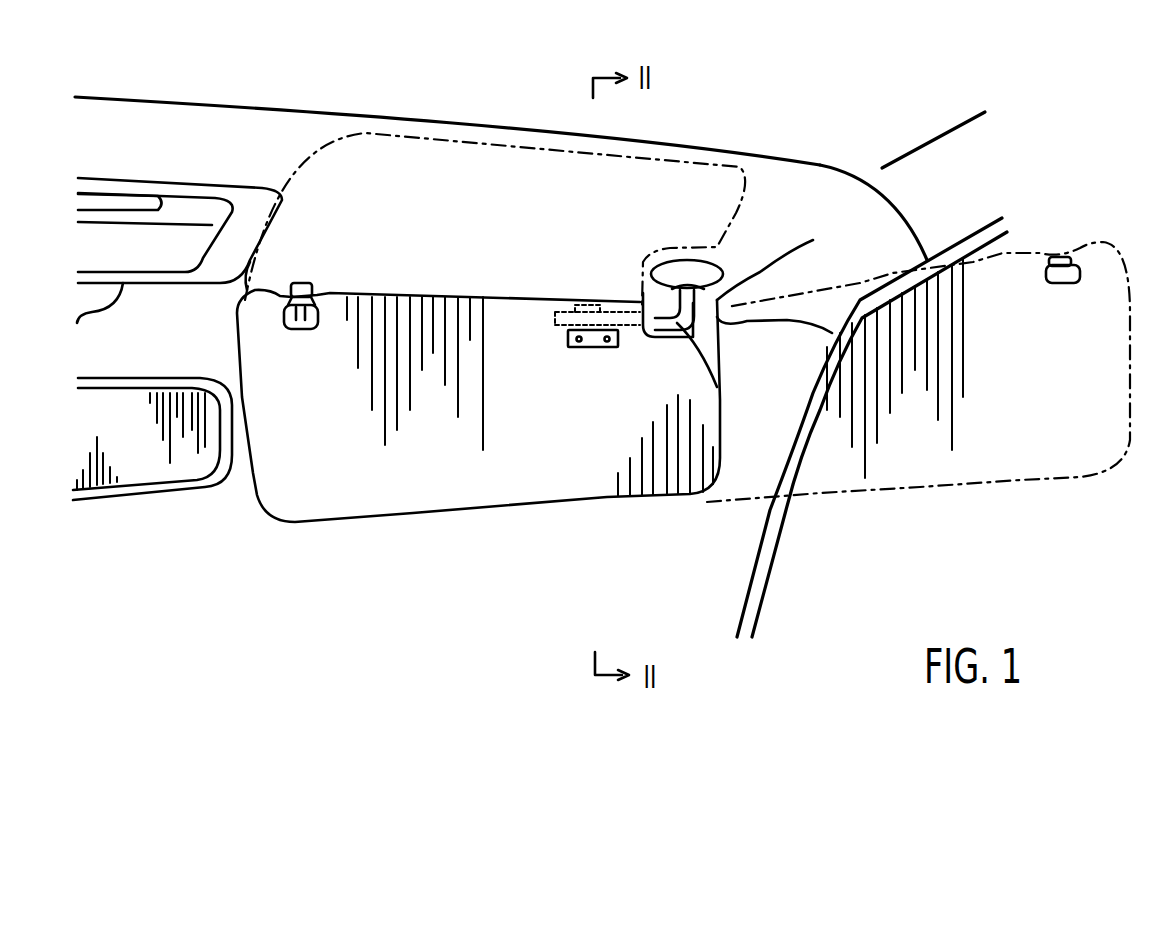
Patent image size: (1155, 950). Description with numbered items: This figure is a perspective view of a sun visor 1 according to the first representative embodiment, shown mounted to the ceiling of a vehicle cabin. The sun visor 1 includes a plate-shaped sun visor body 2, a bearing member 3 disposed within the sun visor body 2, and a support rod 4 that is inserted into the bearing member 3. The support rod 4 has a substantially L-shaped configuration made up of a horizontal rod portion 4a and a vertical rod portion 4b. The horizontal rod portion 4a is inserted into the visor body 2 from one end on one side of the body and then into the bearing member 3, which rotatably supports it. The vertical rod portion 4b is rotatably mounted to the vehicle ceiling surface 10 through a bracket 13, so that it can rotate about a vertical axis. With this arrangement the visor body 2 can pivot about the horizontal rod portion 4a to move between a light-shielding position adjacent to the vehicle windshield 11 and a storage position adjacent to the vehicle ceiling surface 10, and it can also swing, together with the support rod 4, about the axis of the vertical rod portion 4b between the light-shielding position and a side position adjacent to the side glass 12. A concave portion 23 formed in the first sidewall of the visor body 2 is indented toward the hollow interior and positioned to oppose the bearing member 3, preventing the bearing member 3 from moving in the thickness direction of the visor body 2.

The sun visor 1 is at (502, 379).
The sun visor body 2 is at (407, 470).
The bearing member 3 is at (590, 300).
The support rod 4 is at (657, 307).
The horizontal rod portion 4a is at (717, 380).
The vertical rod portion 4b is at (783, 272).
The vehicle ceiling surface 10 is at (492, 98).
The vehicle windshield 11 is at (305, 567).
The side glass 12 is at (903, 558).
The bracket 13 is at (692, 270).
The concave portion 23 is at (607, 350).